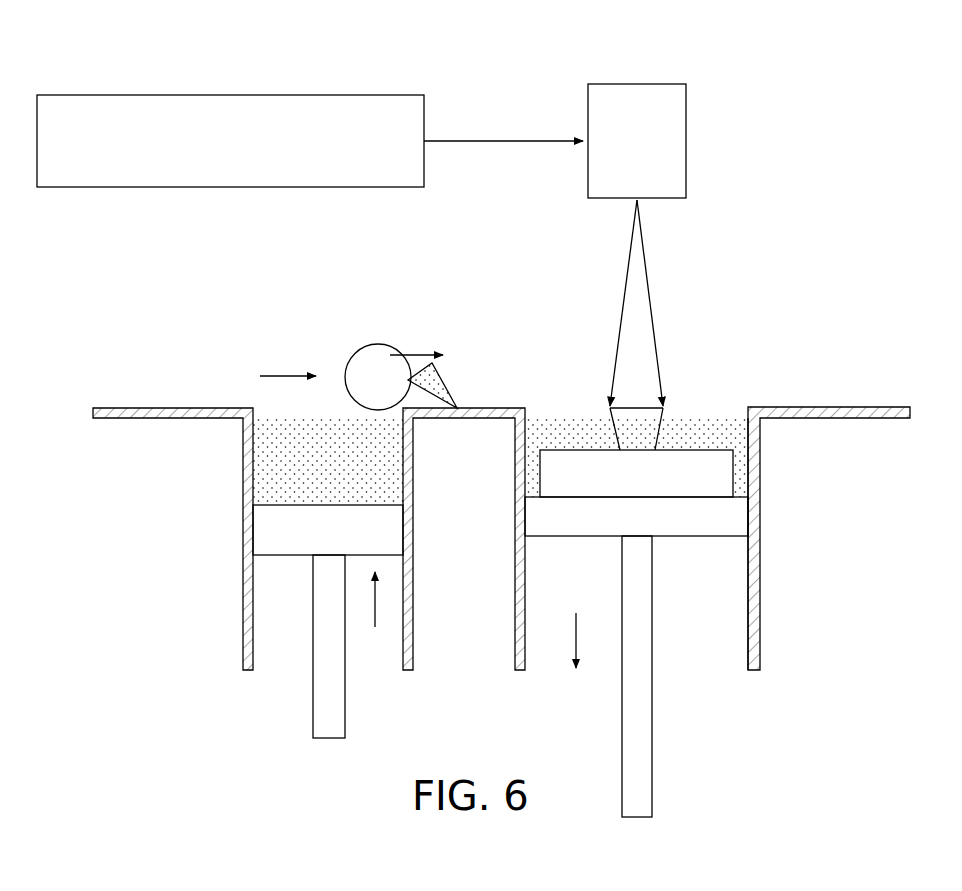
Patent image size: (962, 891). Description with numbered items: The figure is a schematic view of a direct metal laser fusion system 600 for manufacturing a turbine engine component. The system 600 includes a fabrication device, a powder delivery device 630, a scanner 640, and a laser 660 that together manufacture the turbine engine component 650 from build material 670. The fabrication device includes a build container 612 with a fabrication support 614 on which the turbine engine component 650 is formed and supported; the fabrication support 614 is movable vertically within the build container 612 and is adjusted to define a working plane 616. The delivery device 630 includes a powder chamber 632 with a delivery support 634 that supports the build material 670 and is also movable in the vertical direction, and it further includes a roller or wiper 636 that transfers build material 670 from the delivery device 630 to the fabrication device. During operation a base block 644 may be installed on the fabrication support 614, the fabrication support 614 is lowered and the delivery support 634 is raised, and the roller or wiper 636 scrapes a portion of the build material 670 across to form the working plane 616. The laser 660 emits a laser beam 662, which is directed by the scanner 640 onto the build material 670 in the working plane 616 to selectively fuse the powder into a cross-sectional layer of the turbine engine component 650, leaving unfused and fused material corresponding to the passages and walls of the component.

The DMLF system 600 is at (812, 106).
The build container 612 is at (756, 436).
The fabrication support 614 is at (703, 537).
The working plane 616 is at (727, 411).
The powder delivery device 630 is at (158, 519).
The powder chamber 632 is at (244, 471).
The delivery support 634 is at (265, 527).
The roller or wiper 636 is at (380, 344).
The scanner 640 is at (638, 84).
The base block 644 is at (580, 486).
The turbine engine component 650 is at (599, 411).
The laser 660 is at (240, 95).
The laser beam 662 is at (510, 139).
The build material 670 is at (265, 446).